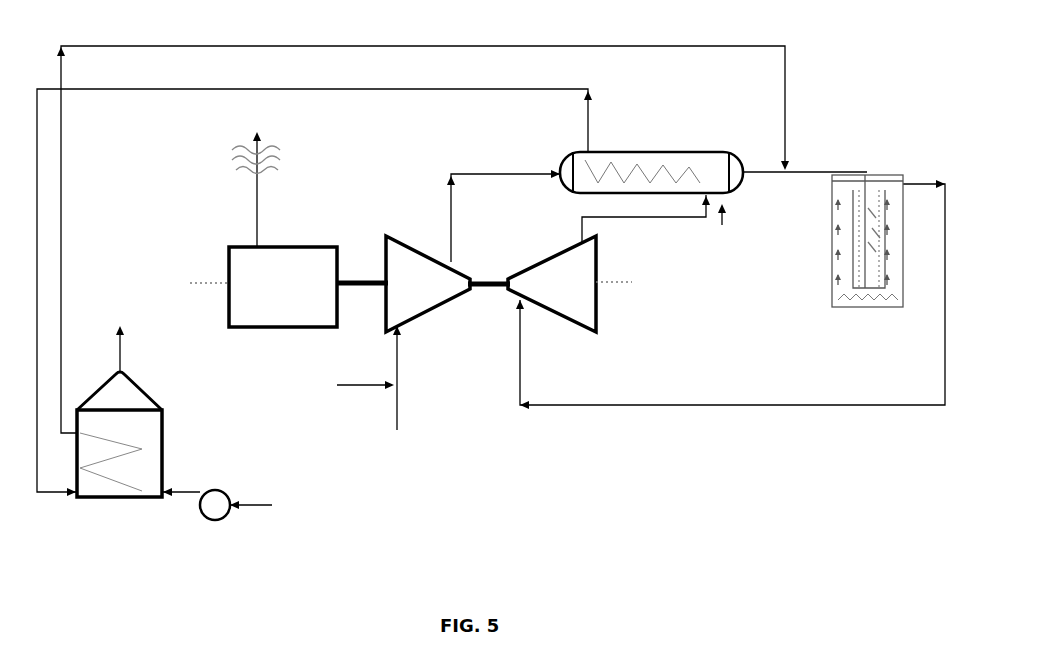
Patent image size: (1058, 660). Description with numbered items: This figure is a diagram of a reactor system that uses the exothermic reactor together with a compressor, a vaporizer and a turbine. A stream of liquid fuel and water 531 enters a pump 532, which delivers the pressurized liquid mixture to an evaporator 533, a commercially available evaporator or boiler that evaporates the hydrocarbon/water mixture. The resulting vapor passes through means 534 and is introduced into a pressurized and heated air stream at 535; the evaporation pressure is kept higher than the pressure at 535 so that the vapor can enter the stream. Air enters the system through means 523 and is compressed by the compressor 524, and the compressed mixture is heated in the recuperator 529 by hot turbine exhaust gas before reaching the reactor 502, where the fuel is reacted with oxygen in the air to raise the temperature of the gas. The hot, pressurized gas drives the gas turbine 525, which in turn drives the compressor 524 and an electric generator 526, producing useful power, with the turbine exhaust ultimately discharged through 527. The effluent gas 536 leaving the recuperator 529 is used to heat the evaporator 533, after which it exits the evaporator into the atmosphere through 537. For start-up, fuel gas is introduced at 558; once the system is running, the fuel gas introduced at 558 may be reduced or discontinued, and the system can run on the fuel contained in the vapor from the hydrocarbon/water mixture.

The exothermic reactor 502 is at (857, 320).
The air introduction means 523 is at (397, 410).
The compressor 524 is at (428, 284).
The gas turbine 525 is at (570, 284).
The electric generator 526 is at (263, 287).
The exhaust discharge means 527 is at (258, 143).
The recuperator 529 is at (693, 152).
The stream of liquid fuel and water 531 is at (270, 504).
The pump 532 is at (228, 512).
The evaporator 533 is at (162, 460).
The vapor delivery means 534 is at (61, 290).
The heated air stream introduction point 535 is at (818, 171).
The recuperator effluent gas 536 is at (590, 128).
The evaporator exhaust outlet 537 is at (122, 356).
The fuel gas introduction point 558 is at (372, 388).